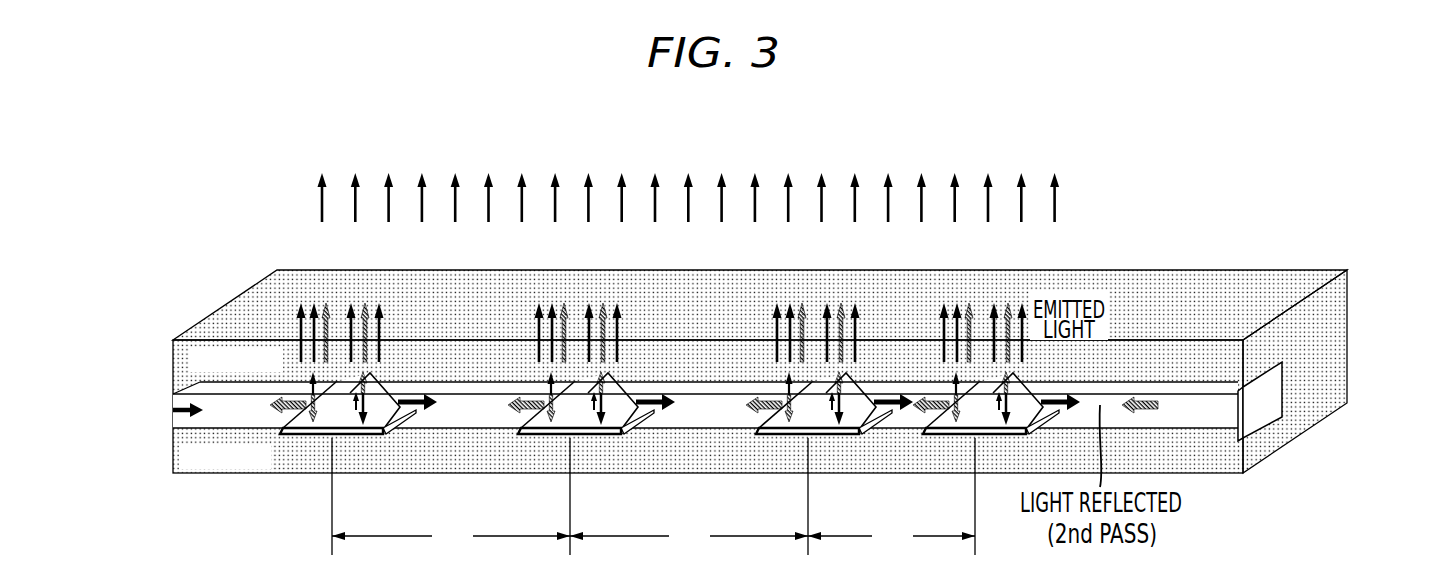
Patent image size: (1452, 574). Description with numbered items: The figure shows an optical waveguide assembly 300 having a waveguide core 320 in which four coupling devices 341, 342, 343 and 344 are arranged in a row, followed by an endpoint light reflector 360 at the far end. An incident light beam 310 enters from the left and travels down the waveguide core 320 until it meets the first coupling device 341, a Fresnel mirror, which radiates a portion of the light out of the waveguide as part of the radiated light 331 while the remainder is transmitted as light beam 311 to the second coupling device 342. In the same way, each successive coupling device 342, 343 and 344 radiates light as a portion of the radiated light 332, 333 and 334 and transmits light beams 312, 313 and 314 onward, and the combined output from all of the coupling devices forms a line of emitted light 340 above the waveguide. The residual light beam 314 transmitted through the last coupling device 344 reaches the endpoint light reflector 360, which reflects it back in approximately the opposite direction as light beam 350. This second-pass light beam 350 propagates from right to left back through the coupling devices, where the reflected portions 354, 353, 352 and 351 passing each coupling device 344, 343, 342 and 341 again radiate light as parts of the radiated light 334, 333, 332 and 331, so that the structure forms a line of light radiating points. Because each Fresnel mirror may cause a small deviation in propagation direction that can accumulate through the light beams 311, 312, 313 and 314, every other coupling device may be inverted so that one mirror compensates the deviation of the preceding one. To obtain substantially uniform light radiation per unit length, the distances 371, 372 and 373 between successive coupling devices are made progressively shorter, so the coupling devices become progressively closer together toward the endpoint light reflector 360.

The waveguide light emitting device 300 is at (727, 106).
The incident light beam 310 is at (173, 397).
The light beam 311 is at (420, 393).
The light beam 312 is at (655, 393).
The light beam 313 is at (892, 393).
The light beam 314 is at (1080, 398).
The waveguide core 320 is at (1203, 387).
The radiated light 331 is at (295, 309).
The radiated light 332 is at (528, 307).
The radiated light 333 is at (768, 307).
The radiated light 334 is at (938, 307).
The emitted light 340 is at (299, 193).
The coupling device 341 is at (317, 437).
The coupling device 342 is at (537, 437).
The coupling device 343 is at (785, 437).
The coupling device 344 is at (958, 437).
The light beam 350 is at (1150, 397).
The reflected light (second pass) at first mirror 351 is at (288, 398).
The reflected light (second pass) at second mirror 352 is at (504, 397).
The reflected light (second pass) at third mirror 353 is at (742, 397).
The reflected light (second pass) at fourth mirror 354 is at (912, 412).
The endpoint light reflector 360 is at (1283, 392).
The distance 371 is at (451, 496).
The distance 372 is at (689, 496).
The distance 373 is at (891, 496).